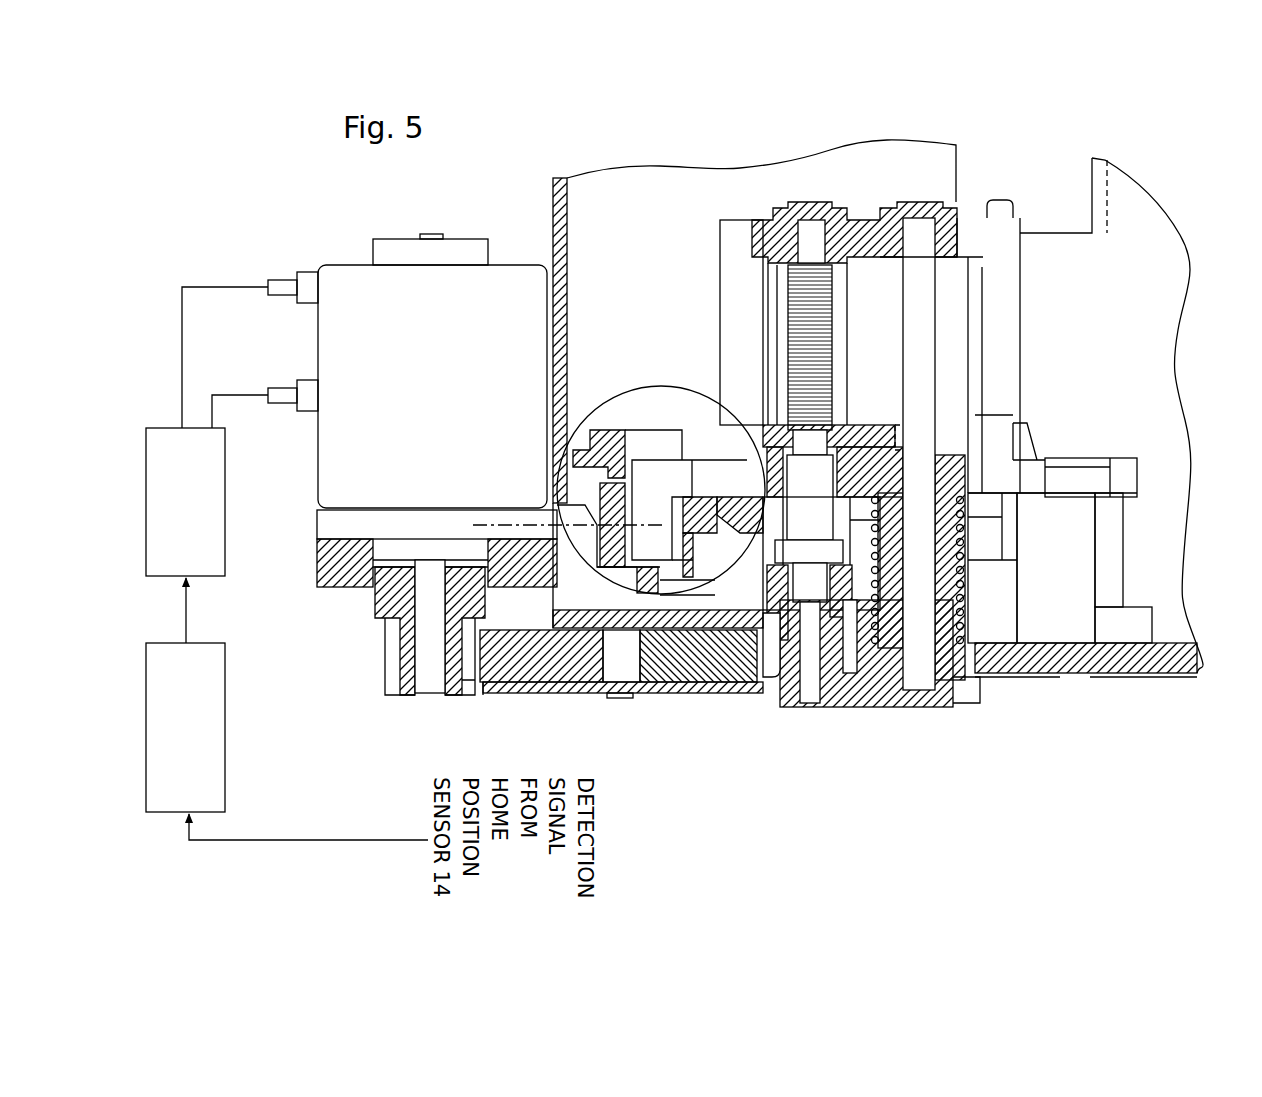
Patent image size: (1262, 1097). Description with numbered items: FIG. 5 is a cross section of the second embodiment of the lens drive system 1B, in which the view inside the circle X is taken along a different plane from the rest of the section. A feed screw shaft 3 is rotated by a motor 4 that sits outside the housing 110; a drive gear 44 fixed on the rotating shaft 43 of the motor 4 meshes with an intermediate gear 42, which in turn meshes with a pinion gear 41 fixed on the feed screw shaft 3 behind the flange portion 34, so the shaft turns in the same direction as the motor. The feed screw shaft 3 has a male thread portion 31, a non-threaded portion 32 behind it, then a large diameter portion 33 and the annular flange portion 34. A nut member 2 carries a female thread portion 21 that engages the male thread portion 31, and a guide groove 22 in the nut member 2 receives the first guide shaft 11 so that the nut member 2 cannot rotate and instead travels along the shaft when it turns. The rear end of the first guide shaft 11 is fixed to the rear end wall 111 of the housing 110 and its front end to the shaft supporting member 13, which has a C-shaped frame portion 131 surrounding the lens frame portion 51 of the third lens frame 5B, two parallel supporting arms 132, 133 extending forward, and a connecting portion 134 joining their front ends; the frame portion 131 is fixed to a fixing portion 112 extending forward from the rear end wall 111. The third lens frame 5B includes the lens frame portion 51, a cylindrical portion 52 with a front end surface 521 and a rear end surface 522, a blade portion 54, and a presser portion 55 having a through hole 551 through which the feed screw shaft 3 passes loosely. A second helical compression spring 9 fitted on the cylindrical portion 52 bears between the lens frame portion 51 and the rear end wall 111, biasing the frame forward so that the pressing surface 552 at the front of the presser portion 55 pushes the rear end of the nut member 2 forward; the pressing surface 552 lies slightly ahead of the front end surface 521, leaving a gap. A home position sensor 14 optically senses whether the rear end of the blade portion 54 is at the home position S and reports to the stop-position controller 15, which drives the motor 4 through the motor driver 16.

The lens drive system 1B is at (1062, 283).
The nut member 2 is at (866, 422).
The feed screw shaft 3 is at (841, 286).
The motor 4 is at (355, 305).
The second helical compression spring 9 is at (867, 645).
The first guide shaft 11 is at (923, 285).
The shaft supporting member 13 is at (757, 216).
The home position sensor 14 is at (540, 660).
The stop-position controller 15 is at (287, 709).
The motor driver 16 is at (207, 431).
The female thread portion 21 is at (750, 420).
The guide groove 22 is at (915, 395).
The male thread portion 31 is at (770, 295).
The non-threaded portion 32 is at (745, 470).
The large diameter portion 33 is at (785, 575).
The annular flange portion 34 is at (803, 520).
The pinion gear 41 is at (777, 683).
The intermediate gear 42 is at (490, 690).
The rotating shaft 43 is at (428, 680).
The drive gear 44 is at (405, 661).
The lens frame portion 51 is at (1027, 448).
The cylindrical portion 52 is at (960, 655).
The blade portion 54 is at (600, 540).
The presser portion 55 is at (712, 470).
The housing 110 is at (548, 192).
The rear end wall 111 is at (1018, 690).
The fixing portion 112 is at (1070, 572).
The frame portion 131 is at (1110, 478).
The supporting arm 132 is at (743, 302).
The supporting arm 133 is at (1000, 283).
The connecting portion 134 is at (843, 265).
The front end surface 521 is at (975, 415).
The rear end surface 522 is at (896, 645).
The through hole 551 is at (722, 470).
The pressing surface 552 is at (850, 445).
The third lens frame 5B is at (732, 500).
The home position S is at (520, 522).
The circle X is at (556, 290).